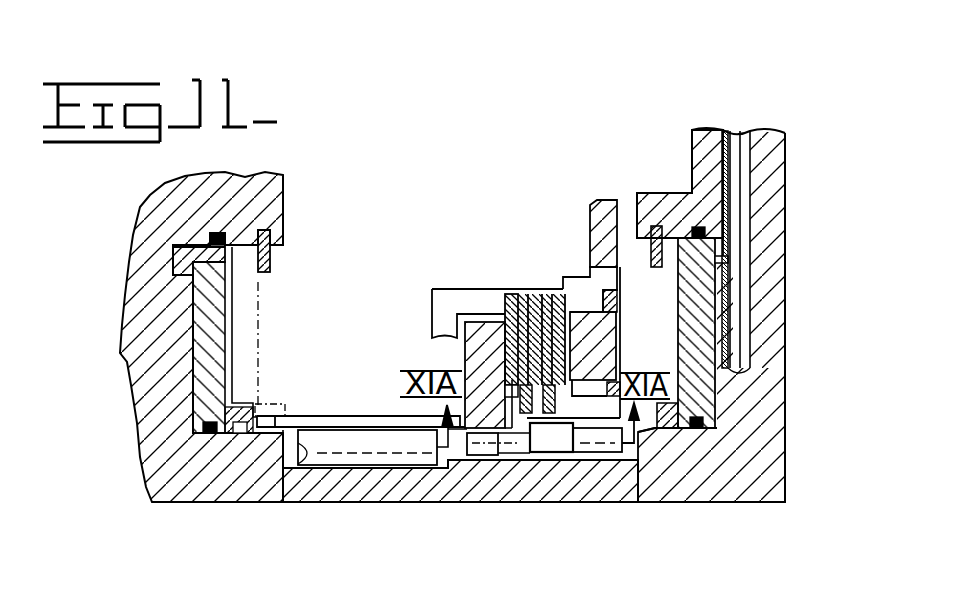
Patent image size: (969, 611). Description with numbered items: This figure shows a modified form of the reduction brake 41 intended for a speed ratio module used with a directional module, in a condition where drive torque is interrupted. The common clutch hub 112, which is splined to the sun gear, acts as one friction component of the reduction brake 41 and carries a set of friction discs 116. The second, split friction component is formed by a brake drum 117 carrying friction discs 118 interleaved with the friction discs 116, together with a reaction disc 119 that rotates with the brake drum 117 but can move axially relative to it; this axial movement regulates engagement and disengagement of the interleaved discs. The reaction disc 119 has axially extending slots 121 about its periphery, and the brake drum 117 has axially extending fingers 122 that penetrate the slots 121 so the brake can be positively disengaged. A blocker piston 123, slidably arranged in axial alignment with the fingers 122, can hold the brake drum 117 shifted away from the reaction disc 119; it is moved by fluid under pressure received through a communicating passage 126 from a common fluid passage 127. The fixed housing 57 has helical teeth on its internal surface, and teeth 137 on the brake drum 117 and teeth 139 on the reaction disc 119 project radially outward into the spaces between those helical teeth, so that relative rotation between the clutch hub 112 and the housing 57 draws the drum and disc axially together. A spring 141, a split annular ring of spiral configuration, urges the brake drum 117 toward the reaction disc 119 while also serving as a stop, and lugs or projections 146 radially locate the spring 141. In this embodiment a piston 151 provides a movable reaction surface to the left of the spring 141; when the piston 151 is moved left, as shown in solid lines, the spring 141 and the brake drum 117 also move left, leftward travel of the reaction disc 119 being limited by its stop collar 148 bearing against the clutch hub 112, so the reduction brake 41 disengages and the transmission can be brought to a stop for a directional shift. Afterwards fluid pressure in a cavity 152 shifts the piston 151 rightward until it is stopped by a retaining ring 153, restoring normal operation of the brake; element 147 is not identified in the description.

The reduction brake 41 is at (551, 482).
The fixed housing 57 is at (388, 490).
The common clutch hub 112 is at (452, 300).
The friction discs 116 is at (500, 318).
The brake drum 117 is at (470, 355).
The friction discs 118 is at (548, 352).
The reaction disc 119 is at (593, 343).
The axially extending slots 121 is at (596, 366).
The axially extending fingers 122 is at (636, 458).
The blocker piston 123 is at (755, 403).
The communicating passage 126 is at (722, 262).
The common fluid passage 127 is at (745, 201).
The teeth 137 is at (483, 455).
The teeth 139 is at (593, 452).
The spring 141 is at (298, 414).
The lugs or projections 146 is at (356, 440).
The bolt head 147 is at (312, 458).
The stop collar 148 is at (617, 306).
The piston 151 is at (207, 367).
The cavity 152 is at (173, 268).
The retaining ring 153 is at (270, 268).